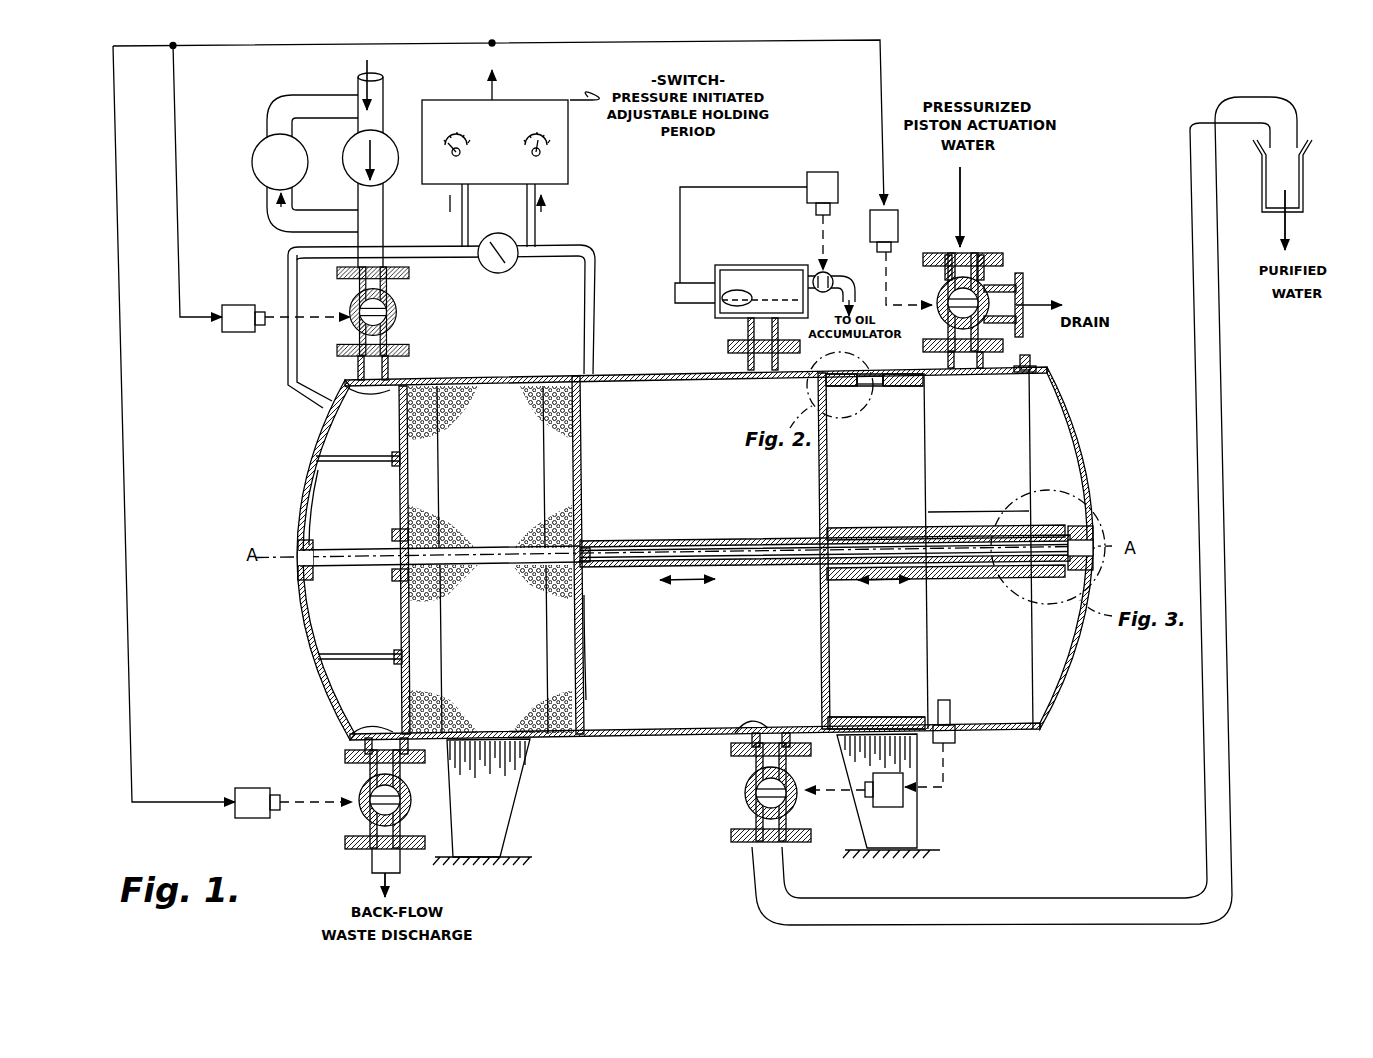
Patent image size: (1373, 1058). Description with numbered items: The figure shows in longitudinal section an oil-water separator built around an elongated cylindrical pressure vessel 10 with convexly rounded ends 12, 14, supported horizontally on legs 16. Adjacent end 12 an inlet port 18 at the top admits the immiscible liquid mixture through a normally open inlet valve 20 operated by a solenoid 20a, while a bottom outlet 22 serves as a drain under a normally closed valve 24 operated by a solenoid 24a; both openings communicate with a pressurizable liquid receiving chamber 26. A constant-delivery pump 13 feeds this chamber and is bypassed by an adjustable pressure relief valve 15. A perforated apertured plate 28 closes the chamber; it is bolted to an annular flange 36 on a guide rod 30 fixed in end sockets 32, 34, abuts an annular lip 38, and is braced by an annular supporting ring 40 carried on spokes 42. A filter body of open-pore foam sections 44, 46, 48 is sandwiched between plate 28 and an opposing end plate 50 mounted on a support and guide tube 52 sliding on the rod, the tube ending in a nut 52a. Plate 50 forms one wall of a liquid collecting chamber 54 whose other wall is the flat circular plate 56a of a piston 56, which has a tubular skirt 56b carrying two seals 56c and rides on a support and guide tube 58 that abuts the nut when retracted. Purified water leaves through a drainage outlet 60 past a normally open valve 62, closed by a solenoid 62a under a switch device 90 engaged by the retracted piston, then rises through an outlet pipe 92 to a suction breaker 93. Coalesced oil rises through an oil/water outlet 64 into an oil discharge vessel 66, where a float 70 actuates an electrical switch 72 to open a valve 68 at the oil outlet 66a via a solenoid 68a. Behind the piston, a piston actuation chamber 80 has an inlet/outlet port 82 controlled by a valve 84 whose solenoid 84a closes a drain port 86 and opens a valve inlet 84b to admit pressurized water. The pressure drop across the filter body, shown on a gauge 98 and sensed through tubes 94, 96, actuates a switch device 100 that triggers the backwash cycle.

The pressure vessel 10 is at (622, 375).
The convexly rounded end 12 is at (306, 462).
The constant-delivery pump 13 is at (349, 148).
The convexly rounded end 14 is at (1090, 463).
The adjustable pressure relief valve 15 is at (253, 150).
The legs 16 is at (508, 816).
The inlet port 18 is at (345, 385).
The inlet valve 20 is at (399, 315).
The operating device 20a is at (238, 333).
The outlet 22 is at (352, 734).
The valve 24 is at (352, 808).
The operating device 24a is at (252, 788).
The liquid receiving chamber 26 is at (322, 503).
The apertured plate 28 is at (396, 508).
The guide rod 30 is at (586, 586).
The end socket 32 is at (298, 543).
The end socket 34 is at (1094, 522).
The annular flange 36 is at (399, 579).
The annular lip 38 is at (322, 405).
The annular supporting ring 40 is at (399, 466).
The spokes 42 is at (328, 456).
The filter body section 44 is at (416, 400).
The filter body section 46 is at (486, 410).
The filter body section 48 is at (560, 396).
The end plate 50 is at (590, 500).
The support and guide tube 52 is at (700, 540).
The nut 52a is at (1095, 562).
The liquid collecting chamber 54 is at (665, 700).
The piston 56 is at (926, 488).
The flat circular plate 56a is at (818, 490).
The tubular skirt 56b is at (927, 420).
The seals 56c is at (868, 390).
The support and guide tube 58 is at (929, 514).
The drainage outlet 60 is at (748, 745).
The valve 62 is at (797, 796).
The operating device 62a is at (900, 800).
The oil/water outlet 64 is at (744, 368).
The oil discharge vessel 66 is at (723, 266).
The oil outlet 66a is at (808, 276).
The valve 68 is at (828, 273).
The operating device 68a is at (818, 172).
The float 70 is at (740, 290).
The electrical switch 72 is at (680, 302).
The piston actuation chamber 80 is at (1034, 470).
The inlet/outlet port 82 is at (1033, 366).
The valve 84 is at (939, 300).
The operating device 84a is at (898, 216).
The valve inlet 84b is at (982, 256).
The valve drain port 86 is at (1024, 292).
The switch device 90 is at (956, 735).
The outlet pipe 92 is at (1000, 897).
The suction breaker 93 is at (1305, 192).
The tube 94 is at (286, 252).
The tube 96 is at (587, 245).
The gauge 98 is at (509, 270).
The switch device 100 is at (570, 165).